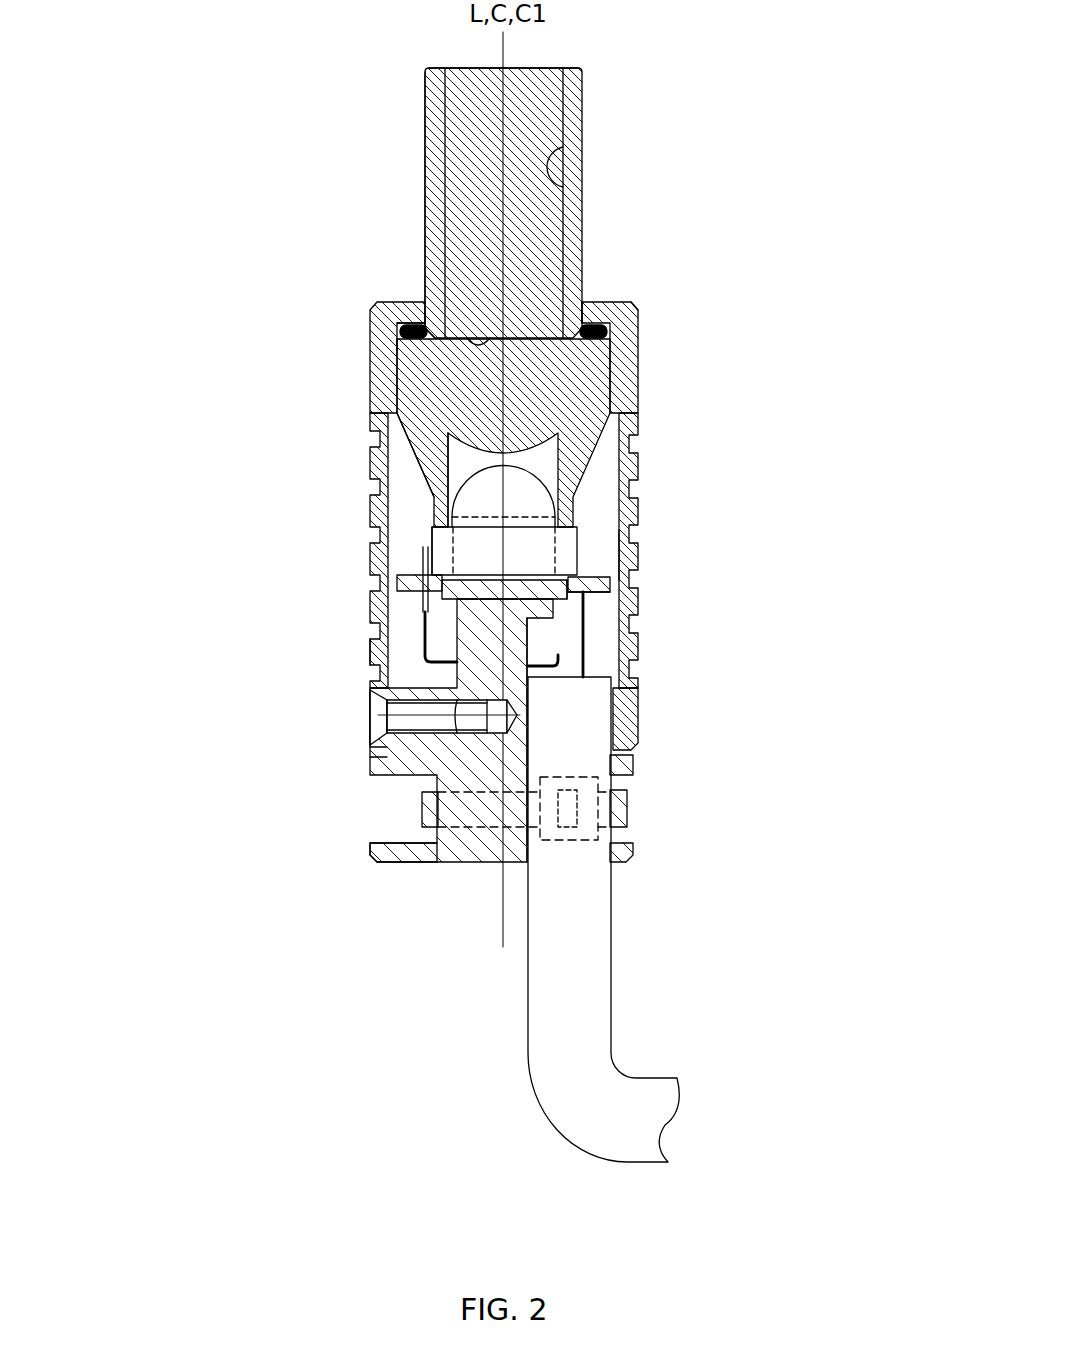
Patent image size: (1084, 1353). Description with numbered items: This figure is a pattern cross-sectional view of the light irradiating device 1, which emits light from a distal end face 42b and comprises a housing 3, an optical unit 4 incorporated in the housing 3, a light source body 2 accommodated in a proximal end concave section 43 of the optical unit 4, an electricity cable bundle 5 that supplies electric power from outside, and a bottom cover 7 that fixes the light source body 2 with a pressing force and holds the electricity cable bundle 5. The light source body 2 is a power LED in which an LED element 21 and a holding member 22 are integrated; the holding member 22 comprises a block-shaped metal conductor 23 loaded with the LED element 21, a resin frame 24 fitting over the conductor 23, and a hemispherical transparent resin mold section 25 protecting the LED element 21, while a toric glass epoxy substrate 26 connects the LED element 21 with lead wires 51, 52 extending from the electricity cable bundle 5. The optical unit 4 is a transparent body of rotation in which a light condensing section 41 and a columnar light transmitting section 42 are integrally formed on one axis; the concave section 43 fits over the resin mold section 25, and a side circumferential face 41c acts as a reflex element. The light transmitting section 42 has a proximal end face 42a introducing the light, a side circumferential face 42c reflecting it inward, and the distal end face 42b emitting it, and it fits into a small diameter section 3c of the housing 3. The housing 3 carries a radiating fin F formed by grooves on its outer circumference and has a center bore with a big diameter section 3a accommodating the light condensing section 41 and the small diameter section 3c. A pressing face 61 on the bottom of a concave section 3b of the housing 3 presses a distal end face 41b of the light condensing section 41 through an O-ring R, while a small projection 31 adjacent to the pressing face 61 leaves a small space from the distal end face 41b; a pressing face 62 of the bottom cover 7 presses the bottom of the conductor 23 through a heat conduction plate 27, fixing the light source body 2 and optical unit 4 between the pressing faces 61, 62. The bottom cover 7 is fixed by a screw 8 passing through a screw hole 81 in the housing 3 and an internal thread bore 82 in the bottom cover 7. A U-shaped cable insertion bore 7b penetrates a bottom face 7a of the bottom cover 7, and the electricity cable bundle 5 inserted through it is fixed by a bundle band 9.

The light irradiating device 1 is at (338, 58).
The light source body 2 is at (543, 519).
The LED element 21 is at (573, 498).
The holding member 22 is at (447, 451).
The conductor 23 is at (440, 583).
The resin frame 24 is at (432, 535).
The resin mold section 25 is at (437, 472).
The glass epoxy substrate 26 is at (632, 577).
The heat conduction plate 27 is at (580, 583).
The housing 3 is at (494, 378).
The big diameter section 3a is at (595, 553).
The concave section 3b is at (610, 328).
The small diameter section 3c is at (560, 188).
The small projection 31 is at (425, 325).
The optical unit 4 is at (535, 56).
The light condensing section 41 is at (494, 500).
The distal end face 41b is at (576, 326).
The side circumferential face 41c is at (613, 340).
The light transmitting section 42 is at (490, 172).
The proximal end face 42a is at (433, 328).
The distal end face 42b is at (465, 67).
The side circumferential face 42c is at (445, 181).
The concave section 43 is at (543, 460).
The electricity cable bundle 5 is at (612, 925).
The lead wire 51 is at (424, 632).
The lead wire 52 is at (585, 650).
The pressing face 61 is at (400, 332).
The pressing face 62 is at (575, 600).
The bottom cover 7 is at (463, 775).
The bottom face 7a is at (447, 862).
The cable insertion bore 7b is at (530, 838).
The screw 8 is at (382, 748).
The screw hole 81 is at (370, 735).
The internal thread bore 82 is at (413, 725).
The bundle band 9 is at (620, 795).
The radiating fin F is at (372, 660).
The O-ring R is at (397, 340).